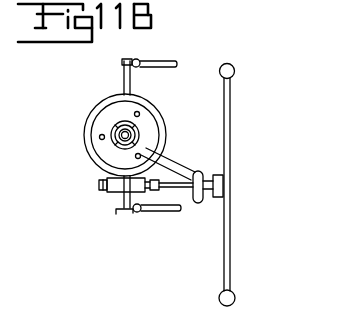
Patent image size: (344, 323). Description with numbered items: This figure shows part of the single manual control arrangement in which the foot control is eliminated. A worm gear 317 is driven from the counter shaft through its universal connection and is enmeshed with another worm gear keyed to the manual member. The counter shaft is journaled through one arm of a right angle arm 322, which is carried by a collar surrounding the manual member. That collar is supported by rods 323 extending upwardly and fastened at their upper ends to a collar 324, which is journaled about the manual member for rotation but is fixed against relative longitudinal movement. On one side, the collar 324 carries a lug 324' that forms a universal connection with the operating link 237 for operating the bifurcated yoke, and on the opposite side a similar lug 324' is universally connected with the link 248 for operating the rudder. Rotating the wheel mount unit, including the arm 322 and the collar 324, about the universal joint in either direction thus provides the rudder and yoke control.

The operating link 237 is at (157, 61).
The link 248 is at (178, 213).
The worm gear 317 is at (110, 195).
The right angle arm 322 is at (177, 168).
The rods 323 is at (135, 156).
The collar 324 is at (71, 135).
The lug 324' is at (106, 149).